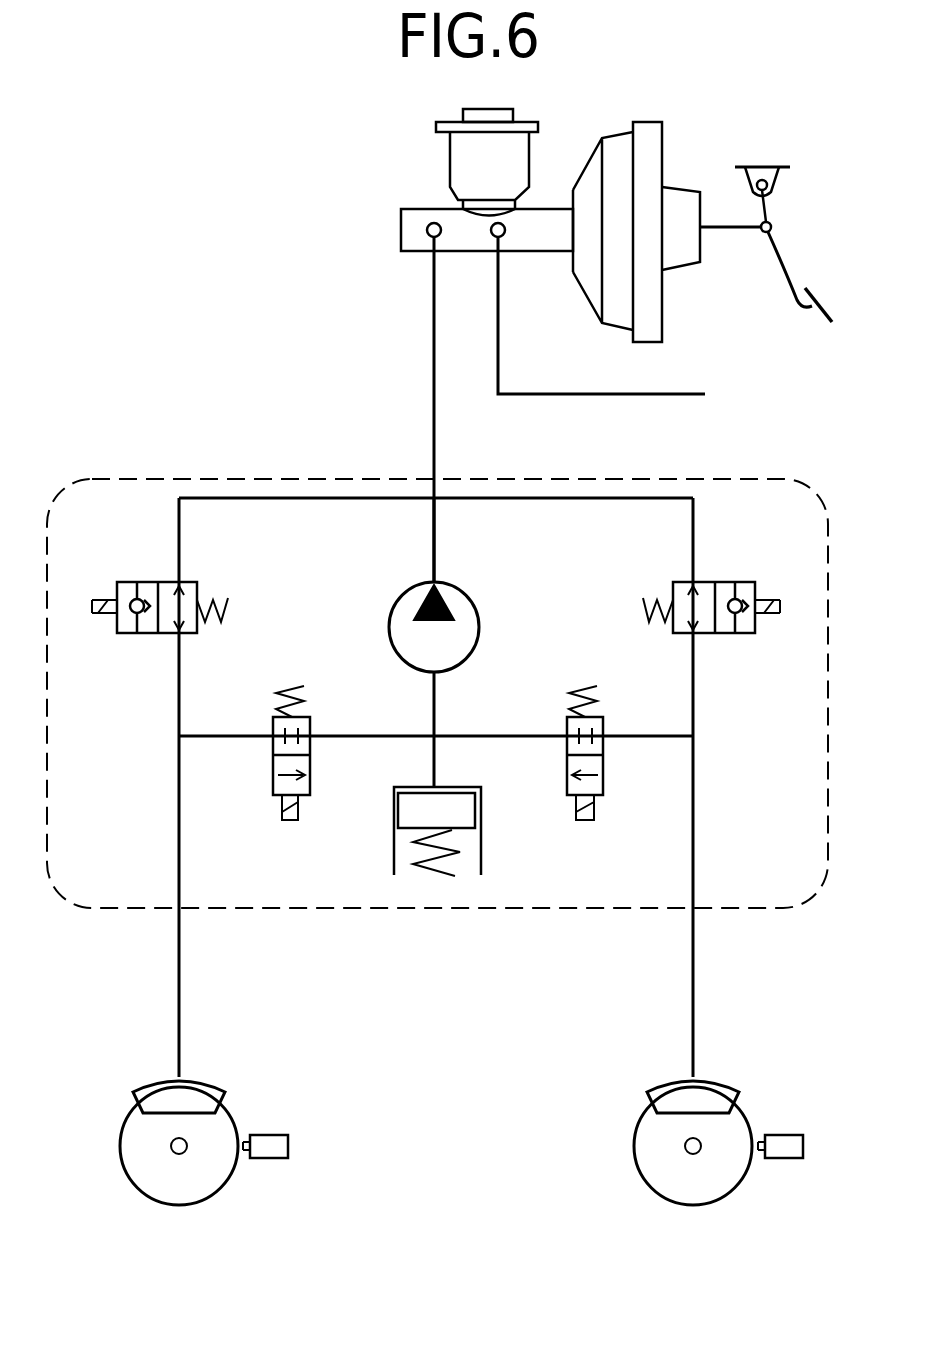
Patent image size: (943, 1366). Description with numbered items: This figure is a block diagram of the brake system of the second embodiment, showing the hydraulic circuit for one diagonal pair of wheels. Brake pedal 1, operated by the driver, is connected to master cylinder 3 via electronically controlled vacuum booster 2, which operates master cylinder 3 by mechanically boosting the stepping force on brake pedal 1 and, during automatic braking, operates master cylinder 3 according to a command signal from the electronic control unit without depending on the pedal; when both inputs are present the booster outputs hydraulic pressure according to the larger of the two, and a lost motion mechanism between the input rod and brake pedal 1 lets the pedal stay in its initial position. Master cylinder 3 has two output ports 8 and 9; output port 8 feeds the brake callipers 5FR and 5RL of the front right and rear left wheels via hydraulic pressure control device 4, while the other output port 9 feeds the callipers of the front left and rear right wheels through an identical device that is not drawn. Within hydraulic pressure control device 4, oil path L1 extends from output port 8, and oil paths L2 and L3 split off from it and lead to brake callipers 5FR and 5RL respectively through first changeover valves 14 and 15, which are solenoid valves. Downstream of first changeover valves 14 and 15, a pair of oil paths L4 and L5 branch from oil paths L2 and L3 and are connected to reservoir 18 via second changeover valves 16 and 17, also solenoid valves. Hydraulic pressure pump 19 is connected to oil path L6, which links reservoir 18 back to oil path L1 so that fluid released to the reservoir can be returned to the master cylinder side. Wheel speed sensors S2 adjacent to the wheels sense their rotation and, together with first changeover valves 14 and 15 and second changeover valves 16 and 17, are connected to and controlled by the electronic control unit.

The brake pedal 1 is at (808, 298).
The electronically controlled vacuum booster 2 is at (620, 150).
The master cylinder 3 is at (412, 212).
The hydraulic pressure control device 4 is at (637, 480).
The brake calliper 5FR is at (198, 1087).
The brake calliper 5RL is at (704, 1087).
The output port 8 is at (427, 236).
The output port 9 is at (492, 236).
The first changeover valve 14 is at (148, 580).
The first changeover valve 15 is at (723, 583).
The second changeover valve 16 is at (273, 767).
The second changeover valve 17 is at (607, 767).
The reservoir 18 is at (392, 830).
The hydraulic pressure pump 19 is at (478, 603).
The oil path L1 is at (433, 427).
The oil path L2 is at (178, 750).
The oil path L3 is at (694, 768).
The oil path L4 is at (370, 735).
The oil path L5 is at (490, 735).
The oil path L6 is at (431, 540).
The wheel speed sensor S2 is at (271, 1140).